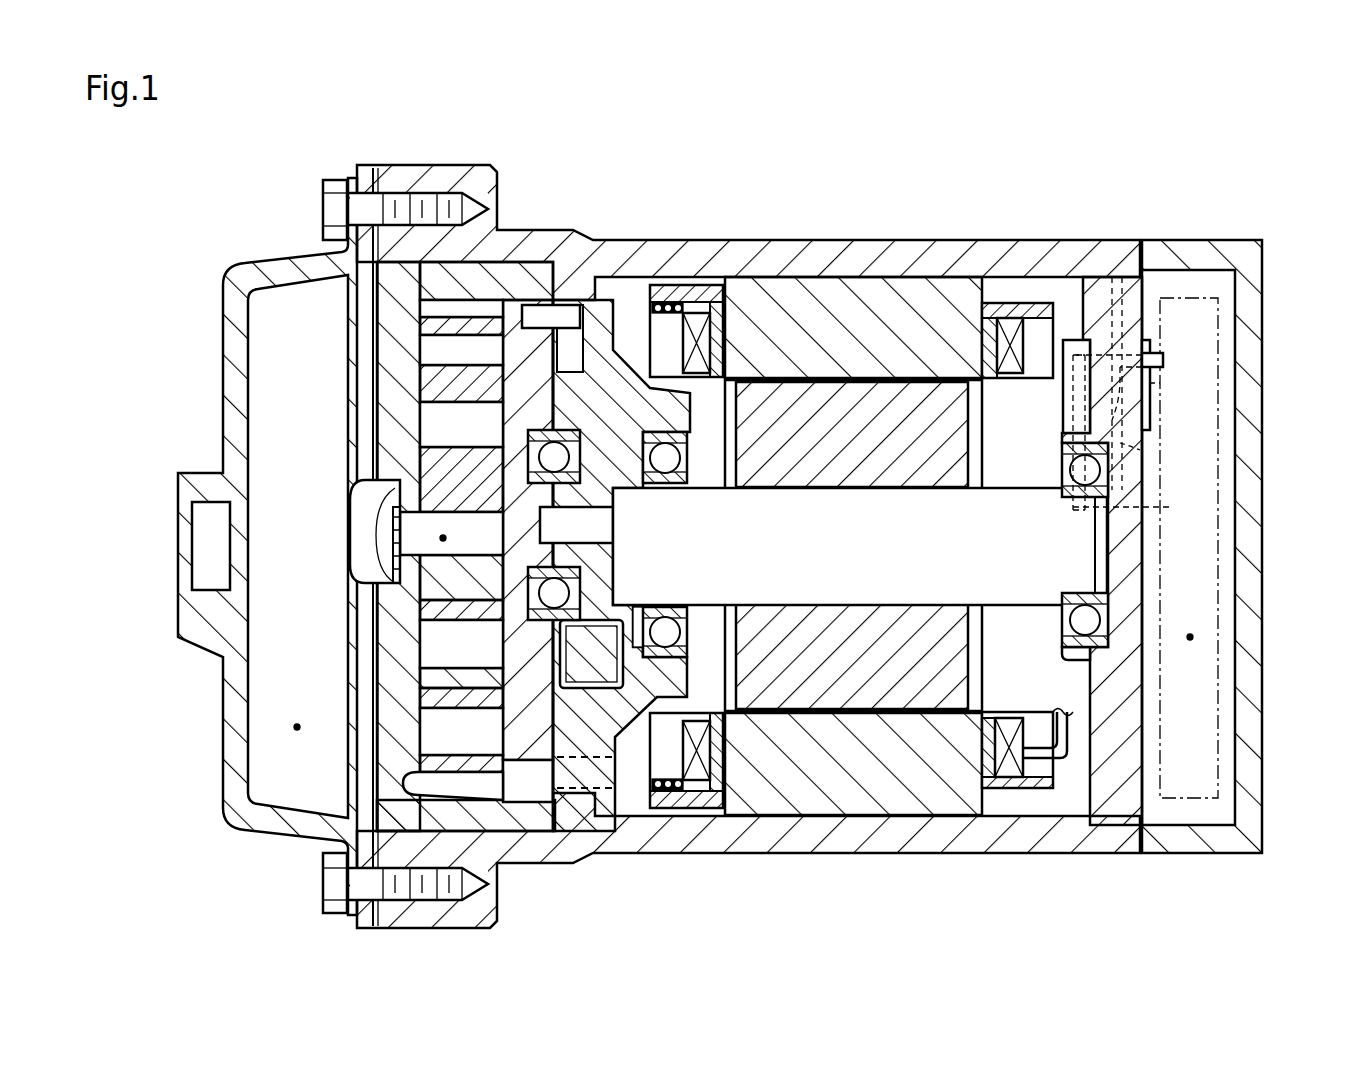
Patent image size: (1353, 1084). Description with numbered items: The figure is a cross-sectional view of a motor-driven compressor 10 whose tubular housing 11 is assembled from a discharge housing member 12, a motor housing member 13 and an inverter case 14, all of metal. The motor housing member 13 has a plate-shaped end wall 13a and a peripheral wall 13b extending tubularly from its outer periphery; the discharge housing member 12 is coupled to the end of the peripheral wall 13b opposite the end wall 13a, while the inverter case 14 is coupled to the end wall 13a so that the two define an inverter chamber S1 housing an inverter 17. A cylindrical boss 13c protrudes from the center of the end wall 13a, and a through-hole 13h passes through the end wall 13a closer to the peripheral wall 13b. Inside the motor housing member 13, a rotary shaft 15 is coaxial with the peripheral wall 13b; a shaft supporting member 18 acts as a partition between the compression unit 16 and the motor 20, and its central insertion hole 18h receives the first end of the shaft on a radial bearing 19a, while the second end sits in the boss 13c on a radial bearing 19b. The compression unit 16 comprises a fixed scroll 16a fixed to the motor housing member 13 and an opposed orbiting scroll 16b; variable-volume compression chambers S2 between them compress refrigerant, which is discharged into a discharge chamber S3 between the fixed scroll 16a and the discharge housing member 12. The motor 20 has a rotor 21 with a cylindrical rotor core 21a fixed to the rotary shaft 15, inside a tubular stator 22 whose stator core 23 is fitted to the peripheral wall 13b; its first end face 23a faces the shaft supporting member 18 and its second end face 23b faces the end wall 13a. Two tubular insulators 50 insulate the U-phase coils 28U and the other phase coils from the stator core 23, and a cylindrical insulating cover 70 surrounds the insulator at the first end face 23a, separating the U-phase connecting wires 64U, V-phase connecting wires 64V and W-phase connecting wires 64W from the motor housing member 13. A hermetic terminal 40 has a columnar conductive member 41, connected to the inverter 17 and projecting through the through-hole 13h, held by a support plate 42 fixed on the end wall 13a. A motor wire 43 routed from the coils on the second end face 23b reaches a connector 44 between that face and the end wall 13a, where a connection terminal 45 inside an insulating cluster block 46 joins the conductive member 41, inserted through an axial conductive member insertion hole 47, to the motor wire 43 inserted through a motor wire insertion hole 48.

The motor-driven compressor 10 is at (200, 192).
The tubular housing 11 is at (548, 233).
The discharge housing member 12 is at (278, 264).
The motor housing member 13 is at (770, 546).
The end wall 13a is at (1138, 712).
The peripheral wall 13b is at (869, 248).
The boss 13c is at (1066, 654).
The through-hole 13h is at (1120, 300).
The inverter case 14 is at (1258, 602).
The rotary shaft 15 is at (700, 608).
The compression unit 16 is at (443, 498).
The fixed scroll 16a is at (385, 373).
The orbiting scroll 16b is at (425, 478).
The inverter 17 is at (1222, 538).
The shaft supporting member 18 is at (606, 601).
The insertion hole 18h is at (638, 640).
The radial bearing 19a is at (670, 484).
The radial bearing 19b is at (1075, 498).
The motor 20 is at (853, 546).
The rotor 21 is at (853, 644).
The rotor core 21a is at (763, 698).
The stator 22 is at (825, 808).
The stator core 23 is at (868, 805).
The first end face 23a is at (824, 563).
The second end face 23b is at (934, 527).
The U-phase coils 28U is at (683, 285).
The hermetic terminal 40 is at (1143, 356).
The conductive member 41 is at (1165, 358).
The support plate 42 is at (1152, 418).
The motor wire 43 is at (1075, 748).
The connector 44 is at (1080, 338).
The connection terminal 45 is at (1160, 383).
The cluster block 46 is at (1140, 450).
The conductive member insertion hole 47 is at (1115, 345).
The motor wire insertion hole 48 is at (1139, 508).
The insulator 50 is at (718, 300).
The U-phase connecting wires 64U is at (676, 784).
The V-phase connecting wires 64V is at (663, 305).
The W-phase connecting wires 64W is at (655, 792).
The cover 70 is at (691, 320).
The inverter chamber S1 is at (1190, 637).
The compression chambers S2 is at (443, 538).
The discharge chamber S3 is at (297, 727).